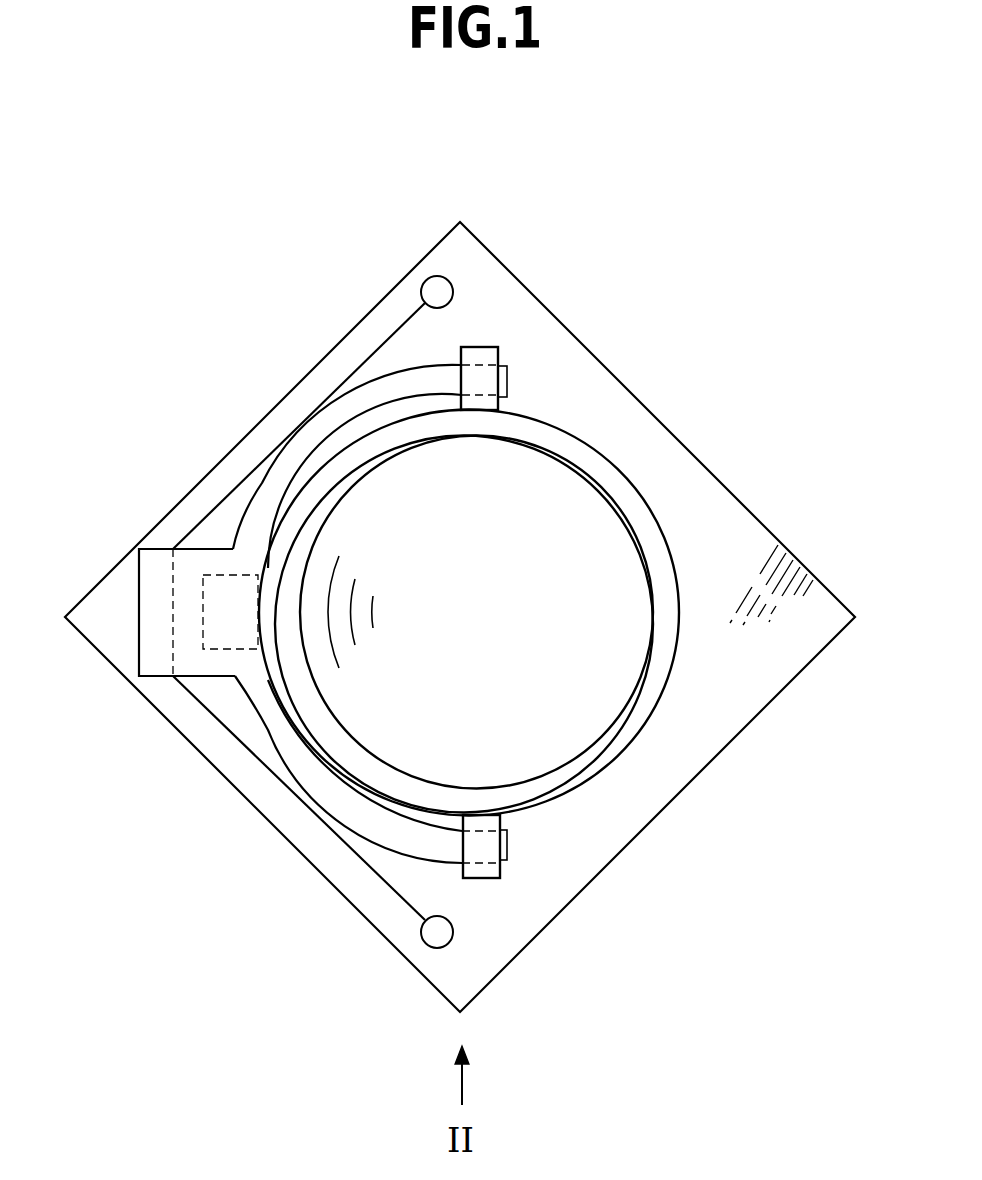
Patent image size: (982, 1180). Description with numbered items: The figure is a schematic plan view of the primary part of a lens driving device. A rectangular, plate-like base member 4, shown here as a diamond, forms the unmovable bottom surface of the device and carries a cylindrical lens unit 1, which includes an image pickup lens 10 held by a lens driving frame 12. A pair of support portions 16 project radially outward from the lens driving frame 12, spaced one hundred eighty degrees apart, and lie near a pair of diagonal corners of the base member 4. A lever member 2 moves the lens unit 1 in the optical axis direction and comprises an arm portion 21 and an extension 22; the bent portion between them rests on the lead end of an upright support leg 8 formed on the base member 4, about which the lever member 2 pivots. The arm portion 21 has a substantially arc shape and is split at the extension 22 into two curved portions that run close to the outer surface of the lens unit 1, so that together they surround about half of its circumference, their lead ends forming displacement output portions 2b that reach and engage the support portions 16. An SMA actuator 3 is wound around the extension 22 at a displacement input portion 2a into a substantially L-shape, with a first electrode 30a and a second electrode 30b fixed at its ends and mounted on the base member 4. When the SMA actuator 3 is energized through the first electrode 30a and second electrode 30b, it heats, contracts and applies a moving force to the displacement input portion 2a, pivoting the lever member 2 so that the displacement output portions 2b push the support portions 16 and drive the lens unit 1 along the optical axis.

The lens unit 1 is at (557, 622).
The lever member 2 is at (278, 615).
The displacement input portion 2a is at (150, 682).
The displacement output portion 2b is at (507, 378).
The SMA actuator 3 is at (245, 477).
The base member 4 is at (493, 293).
The support leg 8 is at (229, 598).
The image pickup lens 10 is at (560, 718).
The lens driving frame 12 is at (637, 712).
The support portion 16 is at (483, 347).
The arm portion 21 is at (279, 755).
The extension 22 is at (198, 677).
The first electrode 30a is at (428, 279).
The second electrode 30b is at (432, 948).